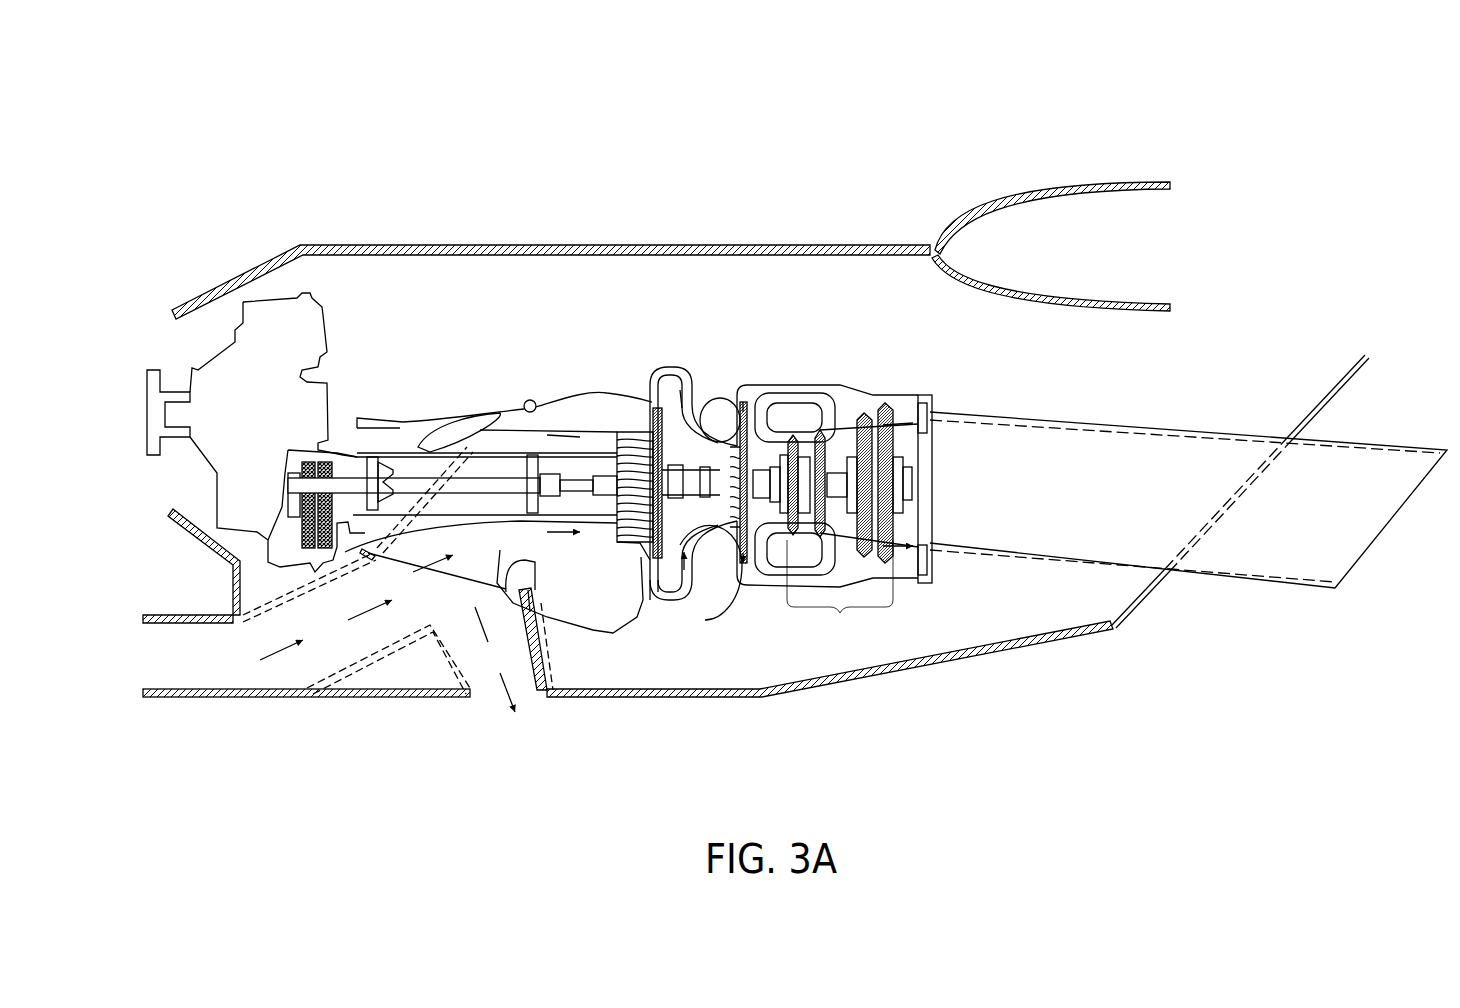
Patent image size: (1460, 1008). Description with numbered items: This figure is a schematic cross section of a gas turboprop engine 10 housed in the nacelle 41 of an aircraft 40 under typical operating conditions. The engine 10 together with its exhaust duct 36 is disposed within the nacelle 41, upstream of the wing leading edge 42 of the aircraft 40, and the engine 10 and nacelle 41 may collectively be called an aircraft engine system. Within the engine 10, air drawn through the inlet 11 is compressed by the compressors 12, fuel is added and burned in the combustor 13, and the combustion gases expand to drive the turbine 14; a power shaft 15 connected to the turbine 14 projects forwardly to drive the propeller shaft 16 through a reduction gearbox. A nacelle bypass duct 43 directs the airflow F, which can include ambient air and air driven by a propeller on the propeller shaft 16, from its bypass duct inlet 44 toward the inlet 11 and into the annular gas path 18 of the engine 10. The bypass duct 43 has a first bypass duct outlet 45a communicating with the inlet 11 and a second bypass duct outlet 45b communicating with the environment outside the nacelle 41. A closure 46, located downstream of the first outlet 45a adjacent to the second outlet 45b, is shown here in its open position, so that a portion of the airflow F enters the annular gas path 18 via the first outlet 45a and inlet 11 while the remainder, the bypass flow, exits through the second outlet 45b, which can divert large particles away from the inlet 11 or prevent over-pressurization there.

The gas turboprop engine 10 is at (591, 357).
The inlet 11 is at (458, 558).
The compressors 12 is at (657, 535).
The combustor 13 is at (808, 403).
The turbine 14 is at (832, 527).
The power shaft 15 is at (478, 477).
The propeller shaft 16 is at (172, 378).
The annular gas path 18 is at (552, 427).
The exhaust duct 36 is at (1077, 560).
The aircraft 40 is at (1306, 172).
The nacelle 41 is at (236, 244).
The wing leading edge 42 is at (1092, 178).
The nacelle bypass duct 43 is at (338, 652).
The bypass duct inlet 44 is at (133, 658).
The first bypass duct outlet 45a is at (337, 597).
The second bypass duct outlet 45b is at (487, 700).
The closure 46 is at (537, 690).
The airflow F is at (367, 610).